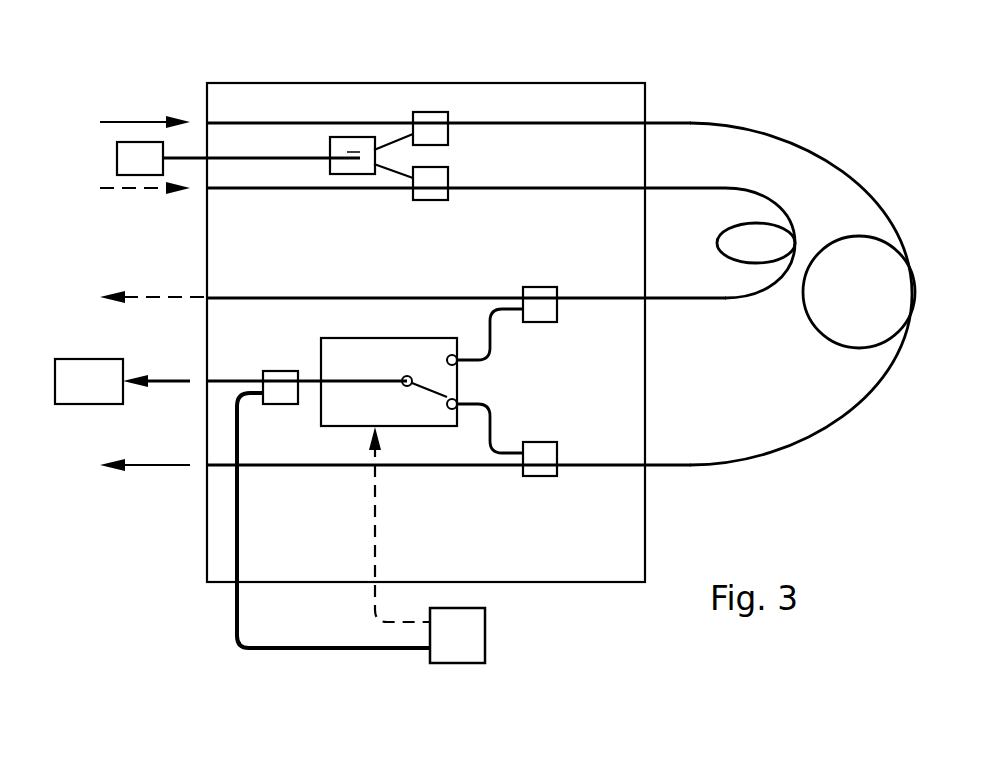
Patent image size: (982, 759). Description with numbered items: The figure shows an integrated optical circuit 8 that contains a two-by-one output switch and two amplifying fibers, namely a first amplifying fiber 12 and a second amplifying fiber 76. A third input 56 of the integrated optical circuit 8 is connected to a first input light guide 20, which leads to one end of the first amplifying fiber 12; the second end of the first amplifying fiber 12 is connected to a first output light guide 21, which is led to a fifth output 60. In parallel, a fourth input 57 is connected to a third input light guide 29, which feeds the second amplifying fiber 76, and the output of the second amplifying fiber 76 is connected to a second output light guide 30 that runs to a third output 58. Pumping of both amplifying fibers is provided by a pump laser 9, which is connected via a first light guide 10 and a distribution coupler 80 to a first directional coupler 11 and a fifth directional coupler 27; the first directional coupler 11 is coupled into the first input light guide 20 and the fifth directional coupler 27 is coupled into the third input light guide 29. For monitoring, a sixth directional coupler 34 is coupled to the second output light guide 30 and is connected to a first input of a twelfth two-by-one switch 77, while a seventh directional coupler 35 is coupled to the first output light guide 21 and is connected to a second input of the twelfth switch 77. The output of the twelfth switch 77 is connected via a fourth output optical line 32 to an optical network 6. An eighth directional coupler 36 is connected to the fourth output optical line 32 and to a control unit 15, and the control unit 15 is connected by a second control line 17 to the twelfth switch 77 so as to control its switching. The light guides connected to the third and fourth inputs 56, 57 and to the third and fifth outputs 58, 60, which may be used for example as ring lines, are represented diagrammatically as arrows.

The optical network 6 is at (70, 360).
The integrated optical circuit 8 is at (668, 83).
The pump laser 9 is at (117, 158).
The first light guide 10 is at (252, 159).
The first directional coupler 11 is at (435, 115).
The first amplifying fiber 12 is at (812, 153).
The control unit 15 is at (485, 642).
The second control line 17 is at (375, 595).
The first input light guide 20 is at (568, 122).
The first output light guide 21 is at (593, 467).
The fifth directional coupler 27 is at (433, 198).
The third input light guide 29 is at (359, 177).
The second output light guide 30 is at (350, 297).
The fourth output optical line 32 is at (207, 382).
The sixth directional coupler 34 is at (547, 320).
The seventh directional coupler 35 is at (555, 460).
The eighth directional coupler 36 is at (280, 375).
The third input 56 is at (205, 121).
The fourth input 57 is at (207, 188).
The third output 58 is at (205, 297).
The fifth output 60 is at (205, 465).
The second amplifying fiber 76 is at (728, 299).
The twelfth two-by-one switch 77 is at (367, 340).
The distribution coupler 80 is at (347, 152).